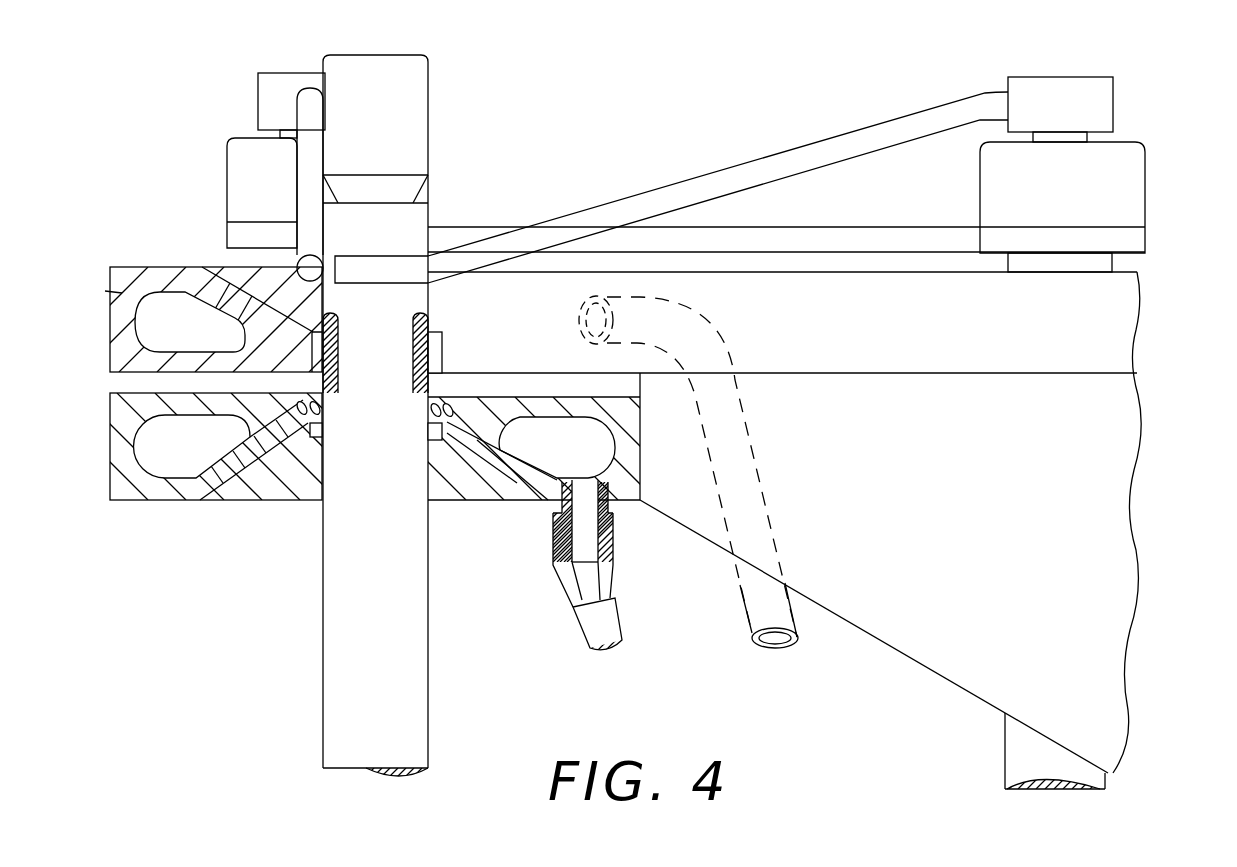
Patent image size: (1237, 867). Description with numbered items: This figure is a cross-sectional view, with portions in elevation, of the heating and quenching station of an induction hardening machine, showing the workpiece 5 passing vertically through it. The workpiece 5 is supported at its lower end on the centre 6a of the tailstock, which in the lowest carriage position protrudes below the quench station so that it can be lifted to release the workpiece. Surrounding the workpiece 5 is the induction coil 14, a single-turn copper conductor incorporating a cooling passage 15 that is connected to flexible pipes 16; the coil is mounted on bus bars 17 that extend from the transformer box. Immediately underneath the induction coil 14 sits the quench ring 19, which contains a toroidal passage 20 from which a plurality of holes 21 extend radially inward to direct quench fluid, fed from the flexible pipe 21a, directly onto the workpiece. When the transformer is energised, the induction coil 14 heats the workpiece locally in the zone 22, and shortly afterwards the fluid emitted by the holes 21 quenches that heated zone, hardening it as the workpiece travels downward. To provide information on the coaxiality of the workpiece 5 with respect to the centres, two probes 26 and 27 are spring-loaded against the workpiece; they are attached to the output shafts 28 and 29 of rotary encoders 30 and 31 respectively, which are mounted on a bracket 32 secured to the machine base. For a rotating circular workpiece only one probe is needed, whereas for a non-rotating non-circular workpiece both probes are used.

The workpiece 5 is at (407, 658).
The centre of tailstock 6a is at (417, 112).
The induction coil 14 is at (116, 291).
The cooling passage 15 is at (147, 332).
The flexible pipes 16 is at (790, 625).
The bus bars 17 is at (928, 640).
The quench ring 19 is at (122, 448).
The toroidal passage 20 is at (172, 470).
The holes 21 is at (320, 412).
The flexible pipe 21a is at (610, 630).
The locally heated zone 22 is at (422, 388).
The probe 26 is at (405, 262).
The probe 27 is at (297, 267).
The output shaft 28 is at (1093, 138).
The output shaft 29 is at (282, 132).
The rotary encoder 30 is at (1133, 160).
The rotary encoder 31 is at (233, 180).
The bracket 32 is at (1023, 752).